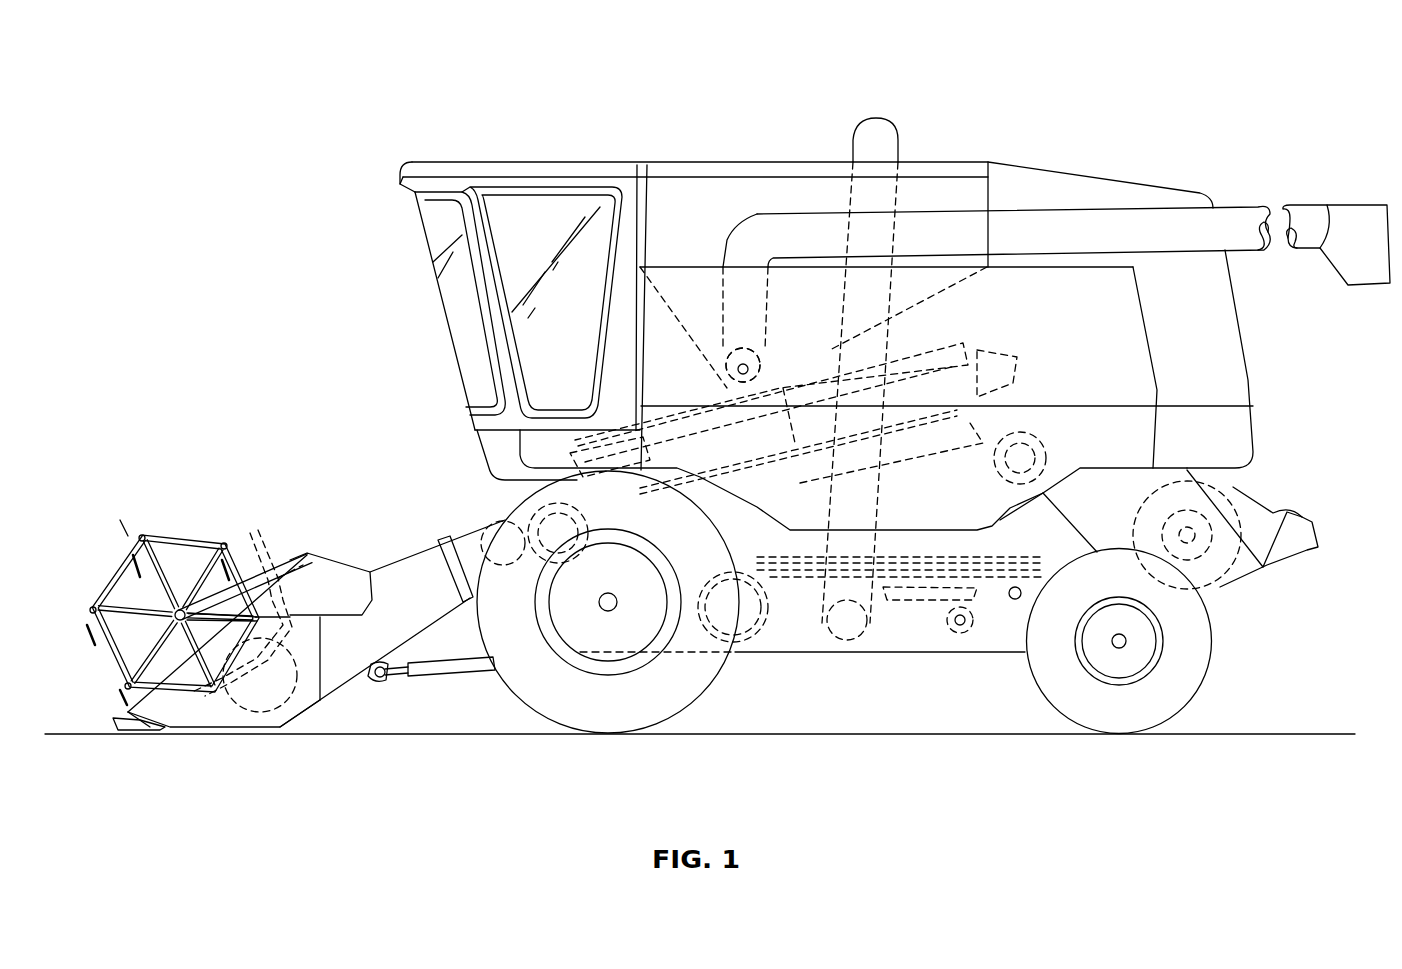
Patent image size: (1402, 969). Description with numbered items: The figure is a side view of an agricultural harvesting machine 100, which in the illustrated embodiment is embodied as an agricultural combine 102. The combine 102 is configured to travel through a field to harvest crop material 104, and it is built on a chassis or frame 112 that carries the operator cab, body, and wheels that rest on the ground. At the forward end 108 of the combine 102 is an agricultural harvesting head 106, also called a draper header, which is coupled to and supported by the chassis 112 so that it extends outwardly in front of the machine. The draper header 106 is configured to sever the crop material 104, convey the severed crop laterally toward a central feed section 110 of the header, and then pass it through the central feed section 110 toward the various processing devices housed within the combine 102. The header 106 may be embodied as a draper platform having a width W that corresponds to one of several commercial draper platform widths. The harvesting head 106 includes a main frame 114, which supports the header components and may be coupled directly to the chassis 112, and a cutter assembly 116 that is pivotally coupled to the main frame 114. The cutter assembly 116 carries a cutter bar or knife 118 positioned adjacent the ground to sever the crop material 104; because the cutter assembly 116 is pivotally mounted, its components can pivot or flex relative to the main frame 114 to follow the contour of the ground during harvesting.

The agricultural harvesting machine 100 is at (195, 58).
The agricultural combine 102 is at (418, 160).
The crop material 104 is at (305, 737).
The agricultural harvesting head 106 is at (183, 535).
The forward end 108 is at (115, 655).
The central feed section 110 is at (265, 548).
The chassis or frame 112 is at (803, 288).
The main frame 114 is at (415, 570).
The cutter assembly 116 is at (122, 731).
The cutter bar or knife 118 is at (162, 728).
The width W is at (150, 595).